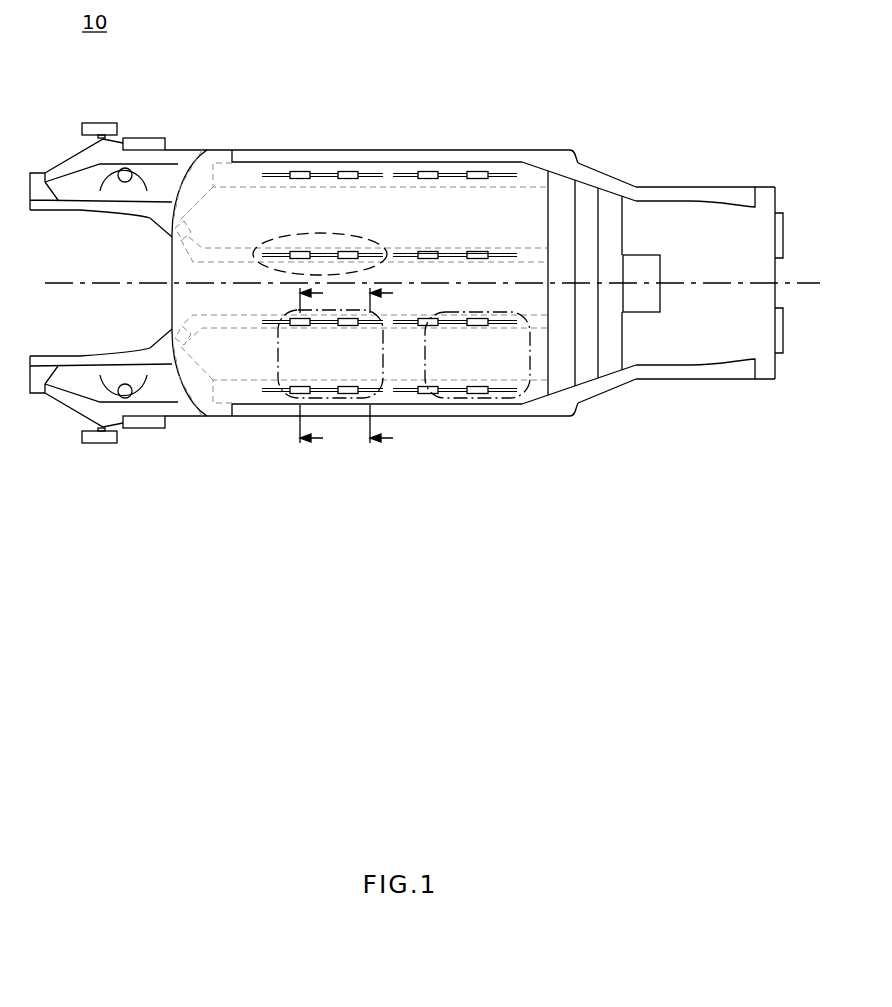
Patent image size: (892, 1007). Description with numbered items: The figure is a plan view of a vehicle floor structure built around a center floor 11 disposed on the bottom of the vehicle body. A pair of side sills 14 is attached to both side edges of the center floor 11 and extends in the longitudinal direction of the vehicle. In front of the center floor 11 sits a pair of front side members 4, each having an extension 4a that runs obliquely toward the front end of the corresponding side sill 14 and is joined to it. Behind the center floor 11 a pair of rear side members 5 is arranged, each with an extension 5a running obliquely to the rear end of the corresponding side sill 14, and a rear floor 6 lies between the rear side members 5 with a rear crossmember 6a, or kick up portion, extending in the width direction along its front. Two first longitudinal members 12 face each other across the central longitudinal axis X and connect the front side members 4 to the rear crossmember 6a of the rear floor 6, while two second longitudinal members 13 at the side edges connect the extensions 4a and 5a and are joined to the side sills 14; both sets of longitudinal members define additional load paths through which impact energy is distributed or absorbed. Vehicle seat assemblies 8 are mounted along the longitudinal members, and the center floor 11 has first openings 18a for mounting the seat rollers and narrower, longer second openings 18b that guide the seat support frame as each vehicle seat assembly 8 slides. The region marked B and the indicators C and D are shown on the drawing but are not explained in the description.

The front side member 4 is at (100, 208).
The extension 4a is at (192, 168).
The rear side member 5 is at (709, 196).
The extension 5a is at (597, 180).
The rear floor 6 is at (709, 342).
The rear crossmember 6a is at (563, 355).
The vehicle seat assembly 8 is at (280, 367).
The center floor 11 is at (315, 218).
The first longitudinal member 12 is at (457, 247).
The second longitudinal member 13 is at (400, 380).
The side sill 14 is at (396, 157).
The first opening 18a is at (300, 318).
The second opening 18b is at (328, 395).
The region B is at (284, 234).
The dimension C is at (324, 367).
The dimension D is at (393, 367).
The central longitudinal axis X is at (442, 285).